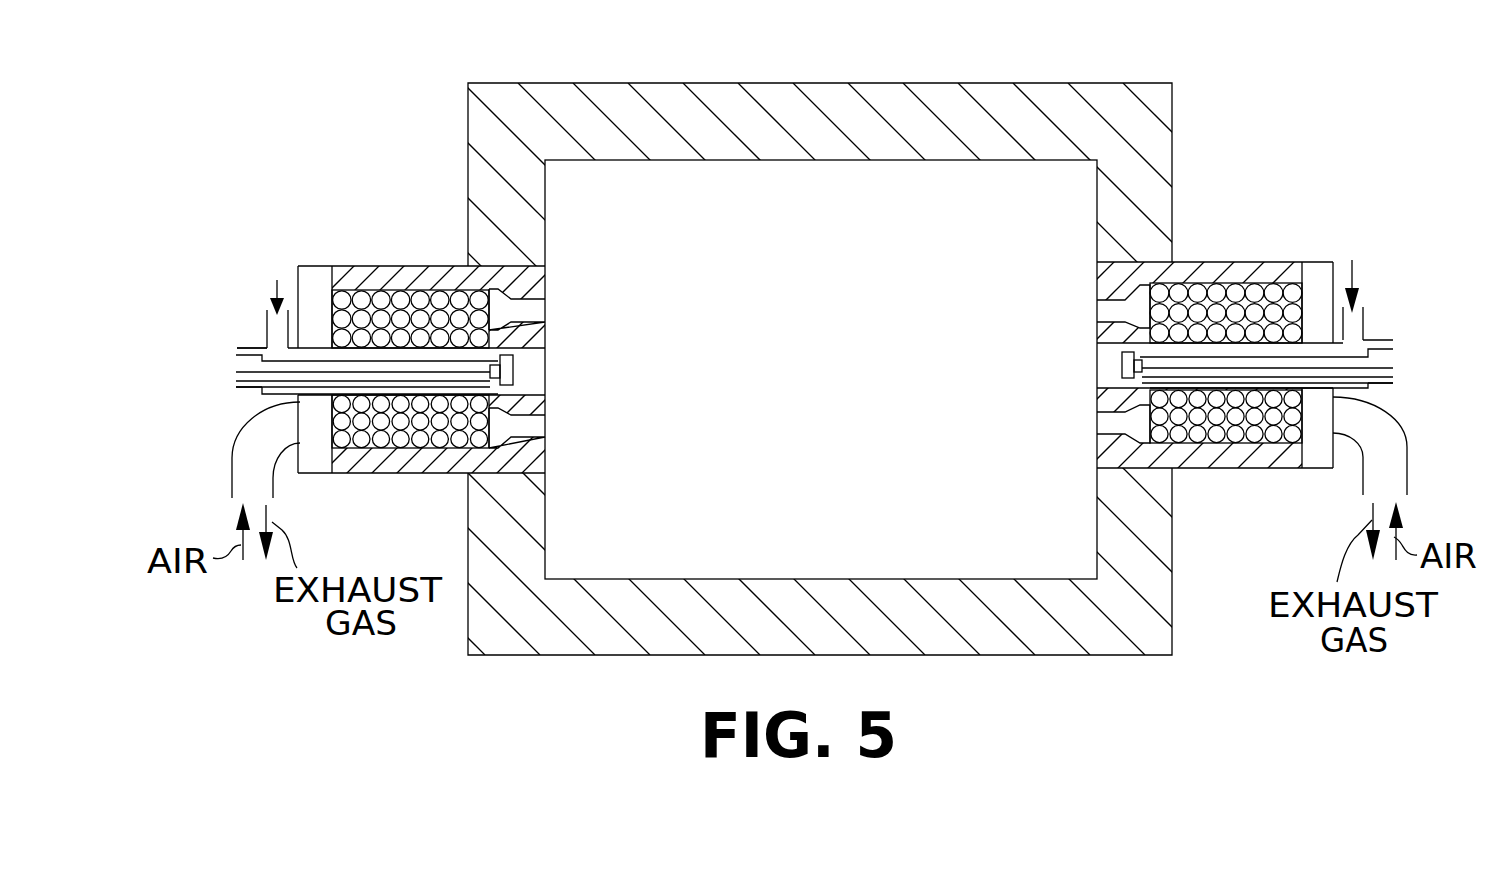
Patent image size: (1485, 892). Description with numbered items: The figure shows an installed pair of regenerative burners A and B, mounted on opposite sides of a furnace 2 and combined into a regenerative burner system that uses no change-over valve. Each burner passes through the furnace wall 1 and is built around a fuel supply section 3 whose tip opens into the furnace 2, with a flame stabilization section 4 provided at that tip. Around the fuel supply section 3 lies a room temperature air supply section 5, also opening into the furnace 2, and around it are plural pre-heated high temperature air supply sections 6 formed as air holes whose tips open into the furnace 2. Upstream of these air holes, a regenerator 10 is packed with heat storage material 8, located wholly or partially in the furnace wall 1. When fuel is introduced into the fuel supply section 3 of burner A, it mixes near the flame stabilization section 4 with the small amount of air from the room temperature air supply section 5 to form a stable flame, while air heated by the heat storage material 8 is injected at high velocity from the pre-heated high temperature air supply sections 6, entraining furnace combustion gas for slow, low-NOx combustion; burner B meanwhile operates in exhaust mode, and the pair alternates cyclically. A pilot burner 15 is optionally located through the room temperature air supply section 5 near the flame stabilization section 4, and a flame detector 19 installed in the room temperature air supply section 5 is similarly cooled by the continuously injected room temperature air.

The furnace wall 1 is at (675, 83).
The furnace 2 is at (863, 177).
The fuel supply section 3 is at (236, 372).
The flame stabilization section 4 is at (513, 372).
The room temperature air supply section 5 is at (268, 340).
The pre-heated high temperature air supply sections 6 is at (530, 310).
The heat storage material 8 is at (403, 438).
The regenerator 10 is at (347, 310).
The pilot burner 15 is at (236, 388).
The flame detector 19 is at (260, 347).
The regenerative burner A is at (413, 228).
The regenerative burner B is at (1206, 207).